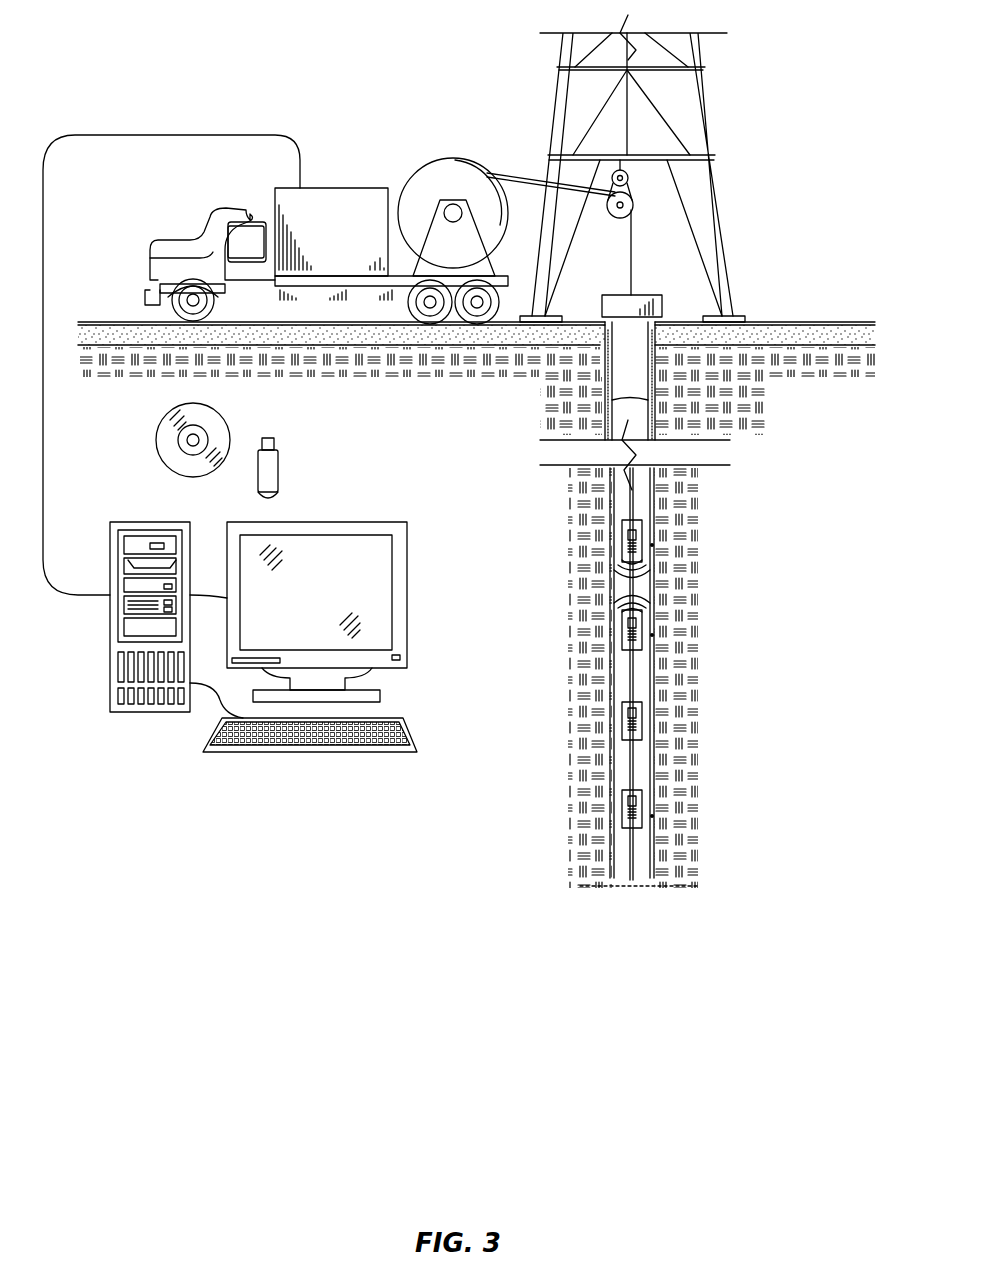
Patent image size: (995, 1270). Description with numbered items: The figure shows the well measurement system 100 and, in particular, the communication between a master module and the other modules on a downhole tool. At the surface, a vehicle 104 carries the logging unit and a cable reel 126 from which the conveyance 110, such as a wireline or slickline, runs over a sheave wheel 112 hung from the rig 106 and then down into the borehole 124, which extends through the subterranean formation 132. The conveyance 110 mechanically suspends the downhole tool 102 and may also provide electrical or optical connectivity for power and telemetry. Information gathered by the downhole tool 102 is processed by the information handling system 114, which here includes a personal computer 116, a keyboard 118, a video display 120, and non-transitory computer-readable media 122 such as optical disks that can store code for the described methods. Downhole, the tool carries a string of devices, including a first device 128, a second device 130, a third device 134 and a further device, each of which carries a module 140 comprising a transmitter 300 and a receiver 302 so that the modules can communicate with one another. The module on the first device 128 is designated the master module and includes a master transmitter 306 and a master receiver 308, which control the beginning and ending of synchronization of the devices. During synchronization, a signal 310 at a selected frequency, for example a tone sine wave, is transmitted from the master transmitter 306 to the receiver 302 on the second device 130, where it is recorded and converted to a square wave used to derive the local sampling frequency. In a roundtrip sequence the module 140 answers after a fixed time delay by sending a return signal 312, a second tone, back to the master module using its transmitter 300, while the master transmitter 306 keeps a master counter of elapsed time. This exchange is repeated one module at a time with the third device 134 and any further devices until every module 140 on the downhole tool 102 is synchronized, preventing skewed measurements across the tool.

The well measurement system 100 is at (212, 57).
The downhole tool 102 is at (700, 786).
The vehicle 104 is at (325, 185).
The rig 106 is at (718, 185).
The conveyance 110 is at (610, 494).
The sheave wheel 112 is at (620, 222).
The information handling system 114 is at (108, 775).
The personal computer 116 is at (150, 522).
The keyboard 118 is at (312, 755).
The video display 120 is at (348, 522).
The non-transitory computer-readable media 122 is at (265, 438).
The borehole 124 is at (722, 418).
The cable reel / winch 126 is at (452, 158).
The first device 128 is at (656, 545).
The second device 130 is at (656, 635).
The subterranean formation 132 is at (815, 498).
The third device 134 is at (656, 816).
The module 140 is at (618, 528).
The transmitter 300 is at (626, 625).
The receiver 302 is at (626, 636).
The master transmitter 306 is at (626, 538).
The master receiver 308 is at (626, 548).
The signal 310 is at (640, 572).
The return signal 312 is at (648, 600).